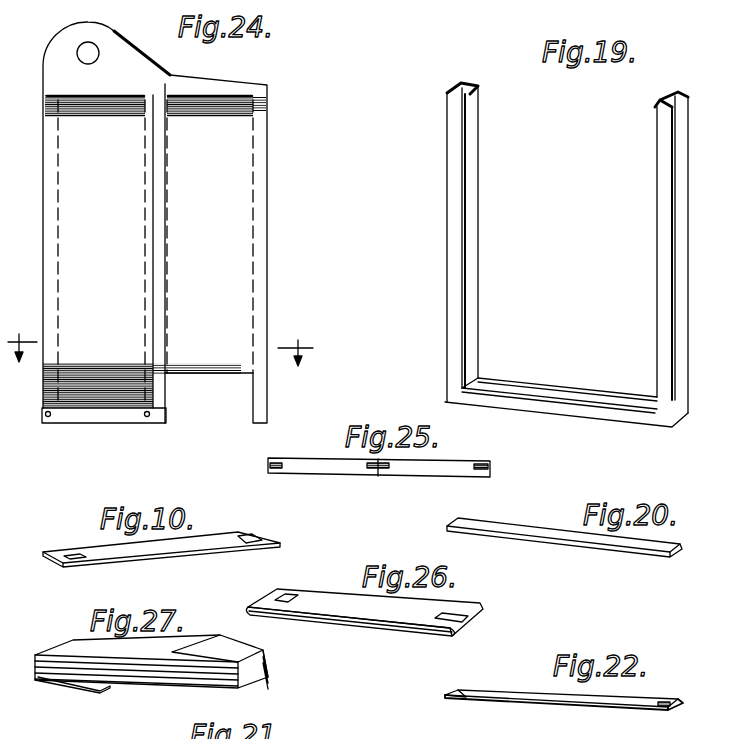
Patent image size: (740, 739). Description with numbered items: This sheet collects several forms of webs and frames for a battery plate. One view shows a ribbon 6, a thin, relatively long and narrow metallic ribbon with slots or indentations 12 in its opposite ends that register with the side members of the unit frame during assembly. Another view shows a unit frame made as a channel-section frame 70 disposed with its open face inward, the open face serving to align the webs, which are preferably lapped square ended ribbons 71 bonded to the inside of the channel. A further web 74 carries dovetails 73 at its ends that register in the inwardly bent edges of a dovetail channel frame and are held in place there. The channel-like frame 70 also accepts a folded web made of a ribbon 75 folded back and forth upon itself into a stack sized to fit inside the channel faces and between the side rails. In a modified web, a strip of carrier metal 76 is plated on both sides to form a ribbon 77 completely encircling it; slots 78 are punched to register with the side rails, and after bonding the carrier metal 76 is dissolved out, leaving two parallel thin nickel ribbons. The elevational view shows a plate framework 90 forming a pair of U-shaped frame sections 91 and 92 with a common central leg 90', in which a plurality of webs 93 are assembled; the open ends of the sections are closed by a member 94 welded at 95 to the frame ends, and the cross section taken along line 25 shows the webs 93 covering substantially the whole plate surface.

In FIG. 24, the plate framework 90 is at (155, 222).
In FIG. 24, the common central leg 90' is at (185, 253).
In FIG. 24, the U-shaped frame section 91 is at (66, 225).
In FIG. 25, the U-shaped frame section 91 is at (269, 466).
In FIG. 24, the U-shaped frame section 92 is at (244, 196).
In FIG. 25, the U-shaped frame section 92 is at (492, 468).
In FIG. 24, the webs 93 is at (100, 105).
In FIG. 25, the webs 93 is at (341, 471).
In FIG. 24, the closing member 94 is at (106, 423).
In FIG. 24, the welds 95 is at (51, 421).
In FIG. 24, the section line 25 is at (159, 341).
In FIG. 19, the channel-section frame 70 is at (448, 246).
In FIG. 20, the square ended ribbon 71 is at (575, 537).
In FIG. 10, the ribbon 6 is at (206, 546).
In FIG. 10, the slots 12 is at (73, 552).
In FIG. 26, the ribbon 77 is at (330, 600).
In FIG. 26, the carrier metal strip 76 is at (403, 625).
In FIG. 26, the slots 78 is at (280, 595).
In FIG. 27, the folded ribbon 75 is at (76, 652).
In FIG. 22, the web 74 is at (565, 698).
In FIG. 22, the dovetails 73 is at (464, 690).